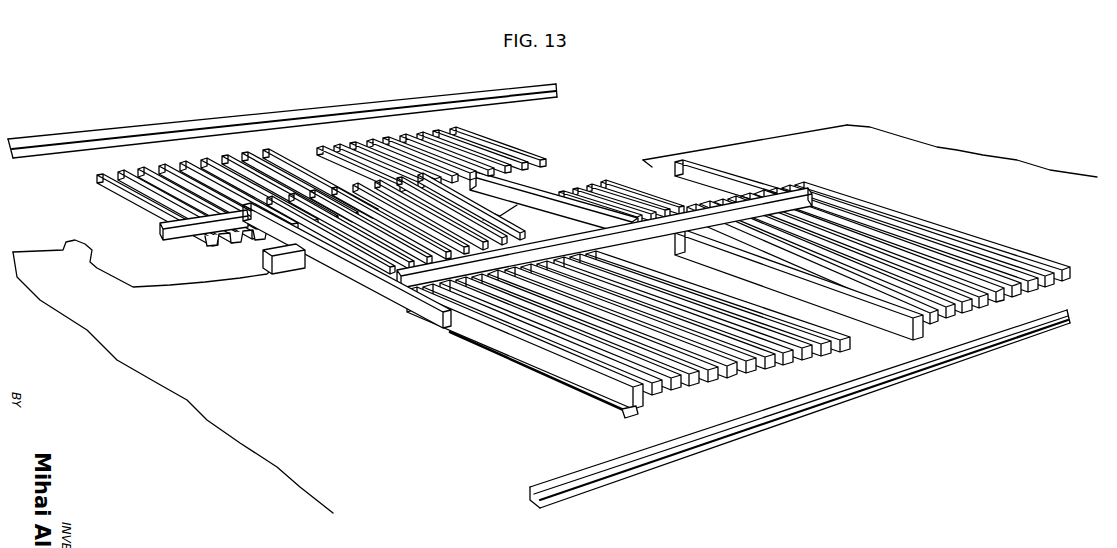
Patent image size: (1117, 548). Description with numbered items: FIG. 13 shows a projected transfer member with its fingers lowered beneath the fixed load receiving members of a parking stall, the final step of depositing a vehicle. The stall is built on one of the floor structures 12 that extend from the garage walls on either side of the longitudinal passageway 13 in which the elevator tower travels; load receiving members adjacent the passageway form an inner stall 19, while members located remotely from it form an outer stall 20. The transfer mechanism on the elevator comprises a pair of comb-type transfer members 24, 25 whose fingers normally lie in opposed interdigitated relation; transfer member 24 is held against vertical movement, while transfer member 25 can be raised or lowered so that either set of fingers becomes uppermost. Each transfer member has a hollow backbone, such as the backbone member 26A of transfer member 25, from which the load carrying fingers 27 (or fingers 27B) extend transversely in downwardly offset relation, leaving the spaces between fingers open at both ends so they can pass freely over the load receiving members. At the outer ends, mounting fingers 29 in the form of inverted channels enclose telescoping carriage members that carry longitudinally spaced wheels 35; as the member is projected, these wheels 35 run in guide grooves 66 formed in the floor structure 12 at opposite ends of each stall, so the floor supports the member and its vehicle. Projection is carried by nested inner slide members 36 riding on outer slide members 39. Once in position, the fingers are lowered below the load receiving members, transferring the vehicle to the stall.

The floor structure 12 is at (1049, 211).
The longitudinal passageway 13 is at (668, 148).
The inner stall 19 is at (637, 161).
The outer stall 20 is at (917, 216).
The transfer member 24 is at (792, 186).
The transfer member 25 is at (184, 246).
The backbone member 26A is at (160, 230).
The load carrying finger 27 is at (838, 342).
The finger 27B is at (474, 132).
The mounting finger 29 is at (538, 360).
The wheel 35 is at (600, 403).
The inner slide member 36 is at (400, 305).
The outer slide member 39 is at (290, 263).
The guide groove 66 is at (630, 417).